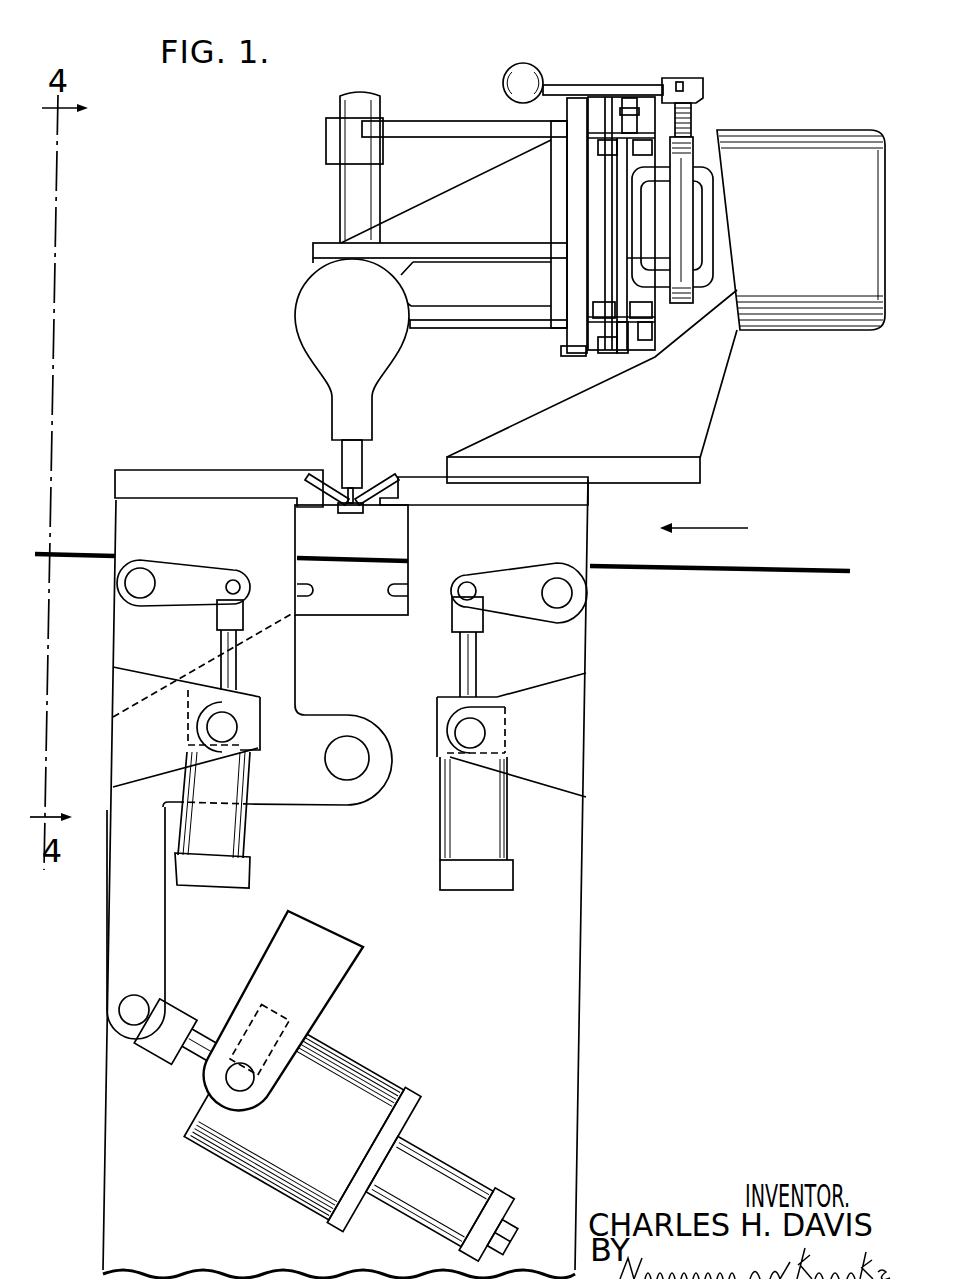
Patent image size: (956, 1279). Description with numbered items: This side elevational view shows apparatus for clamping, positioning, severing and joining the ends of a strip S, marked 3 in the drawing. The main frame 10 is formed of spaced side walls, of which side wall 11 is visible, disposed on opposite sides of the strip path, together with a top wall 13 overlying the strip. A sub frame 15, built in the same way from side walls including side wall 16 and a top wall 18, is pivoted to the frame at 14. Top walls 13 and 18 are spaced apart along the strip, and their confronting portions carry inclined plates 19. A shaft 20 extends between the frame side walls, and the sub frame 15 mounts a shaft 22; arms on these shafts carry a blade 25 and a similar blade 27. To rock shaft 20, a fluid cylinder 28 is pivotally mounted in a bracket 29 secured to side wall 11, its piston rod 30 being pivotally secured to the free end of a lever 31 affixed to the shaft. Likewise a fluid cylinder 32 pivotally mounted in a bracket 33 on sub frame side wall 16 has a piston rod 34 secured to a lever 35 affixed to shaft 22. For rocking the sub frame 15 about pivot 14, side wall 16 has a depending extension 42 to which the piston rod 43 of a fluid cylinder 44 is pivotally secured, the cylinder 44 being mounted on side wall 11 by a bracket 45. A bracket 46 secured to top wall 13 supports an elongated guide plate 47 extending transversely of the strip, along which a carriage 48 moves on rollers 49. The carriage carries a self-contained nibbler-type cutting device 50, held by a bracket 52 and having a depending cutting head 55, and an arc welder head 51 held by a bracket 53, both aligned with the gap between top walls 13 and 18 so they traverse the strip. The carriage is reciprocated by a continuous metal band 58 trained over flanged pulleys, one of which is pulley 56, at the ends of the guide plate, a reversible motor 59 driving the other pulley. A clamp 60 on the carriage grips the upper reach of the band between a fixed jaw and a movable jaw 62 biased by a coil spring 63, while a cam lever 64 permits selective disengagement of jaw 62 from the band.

The strip of material 3 is at (797, 563).
The frame 10 is at (390, 879).
The side wall 11 is at (557, 952).
The top wall 13 is at (430, 488).
The pivot 14 is at (350, 768).
The sub frame 15 is at (297, 658).
The side wall 16 is at (131, 640).
The top wall 18 is at (180, 468).
The inclined plates 19 is at (322, 478).
The shaft 20 is at (572, 600).
The shaft 22 is at (150, 575).
The blade 25 is at (405, 590).
The blade 27 is at (300, 588).
The fluid cylinder 28 is at (490, 830).
The bracket 29 is at (567, 710).
The piston rod 30 is at (474, 655).
The lever 31 is at (509, 577).
The fluid cylinder 32 is at (230, 835).
The bracket 33 is at (115, 752).
The piston rod 34 is at (239, 679).
The lever 35 is at (200, 593).
The depending extension 42 is at (150, 940).
The piston rod 43 is at (197, 1062).
The fluid cylinder 44 is at (367, 1085).
The bracket 45 is at (333, 983).
The bracket 46 is at (707, 382).
The guide plate 47 is at (625, 277).
The carriage 48 is at (568, 356).
The rollers 49 is at (638, 138).
The cutting device 50 is at (297, 333).
The welder head 51 is at (338, 200).
The bracket 52 is at (476, 221).
The bracket 53 is at (468, 298).
The cutting head 55 is at (352, 513).
The flanged pulley 56 is at (695, 199).
The continuous metal band 58 is at (682, 259).
The reversible motor 59 is at (838, 173).
The clamp 60 is at (640, 112).
The movable jaw 62 is at (690, 143).
The coil spring 63 is at (694, 127).
The cam lever 64 is at (672, 80).